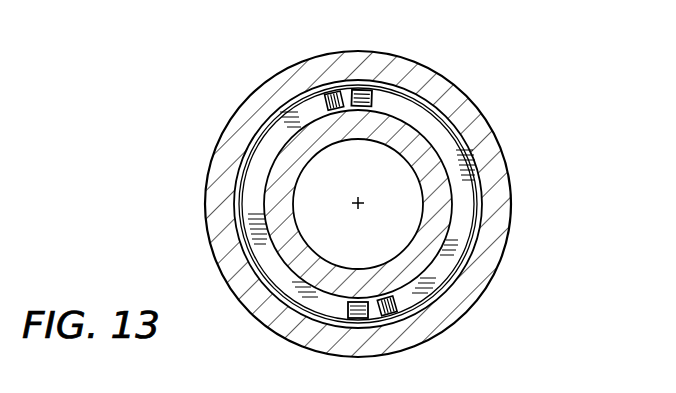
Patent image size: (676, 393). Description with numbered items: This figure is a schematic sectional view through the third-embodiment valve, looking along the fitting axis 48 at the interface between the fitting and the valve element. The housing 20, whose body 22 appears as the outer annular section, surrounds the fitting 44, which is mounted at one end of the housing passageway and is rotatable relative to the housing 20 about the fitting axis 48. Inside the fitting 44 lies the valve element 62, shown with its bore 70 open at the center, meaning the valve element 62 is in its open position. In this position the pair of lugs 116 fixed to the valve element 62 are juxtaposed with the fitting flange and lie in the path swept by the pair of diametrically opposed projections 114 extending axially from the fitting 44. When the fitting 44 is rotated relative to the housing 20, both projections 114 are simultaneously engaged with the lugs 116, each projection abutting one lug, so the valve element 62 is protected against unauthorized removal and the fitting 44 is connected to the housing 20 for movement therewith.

The housing 20 is at (472, 91).
The body 22 is at (512, 195).
The fitting 44 is at (238, 219).
The fitting axis 48 is at (358, 206).
The valve element 62 is at (439, 142).
The bore 70 is at (318, 183).
The projections 114 is at (331, 99).
The lugs 116 is at (380, 97).